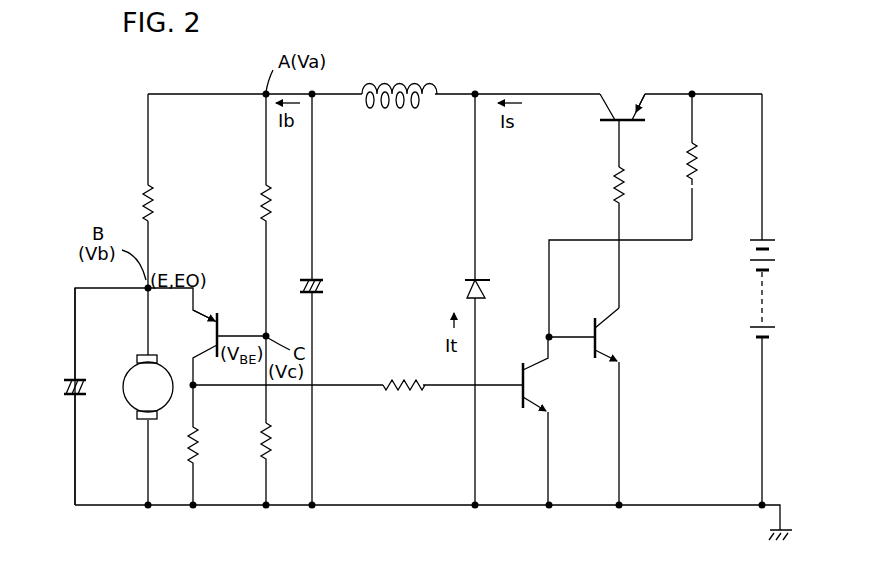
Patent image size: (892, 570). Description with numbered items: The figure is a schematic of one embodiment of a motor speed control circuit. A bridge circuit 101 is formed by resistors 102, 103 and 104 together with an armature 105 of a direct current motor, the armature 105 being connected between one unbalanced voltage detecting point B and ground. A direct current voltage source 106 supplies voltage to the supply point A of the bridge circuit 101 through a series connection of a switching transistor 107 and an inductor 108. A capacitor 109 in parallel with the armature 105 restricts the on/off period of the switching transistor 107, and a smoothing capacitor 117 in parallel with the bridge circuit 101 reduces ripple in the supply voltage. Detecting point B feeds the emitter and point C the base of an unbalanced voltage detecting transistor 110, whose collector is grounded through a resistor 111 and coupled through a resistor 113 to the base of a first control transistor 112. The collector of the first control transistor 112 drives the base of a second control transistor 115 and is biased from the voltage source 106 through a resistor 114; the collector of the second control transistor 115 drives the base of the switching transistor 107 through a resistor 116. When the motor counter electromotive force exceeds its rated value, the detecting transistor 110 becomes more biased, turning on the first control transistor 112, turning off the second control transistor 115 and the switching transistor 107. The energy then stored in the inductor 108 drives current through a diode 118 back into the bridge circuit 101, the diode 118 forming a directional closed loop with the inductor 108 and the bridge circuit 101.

The bridge circuit 101 is at (215, 255).
The resistor 102 is at (145, 193).
The resistor 103 is at (262, 197).
The resistor 104 is at (260, 430).
The armature of a direct current motor 105 is at (132, 393).
The direct current voltage source 106 is at (758, 278).
The switching transistor 107 is at (612, 122).
The inductor 108 is at (403, 85).
The capacitor 109 is at (85, 382).
The unbalanced voltage detecting transistor 110 is at (222, 330).
The resistor 111 is at (187, 448).
The first control transistor 112 is at (540, 402).
The resistor 113 is at (404, 409).
The resistor 114 is at (695, 157).
The second control transistor 115 is at (617, 330).
The resistor 116 is at (614, 194).
The smoothing capacitor 117 is at (327, 285).
The diode 118 is at (473, 278).